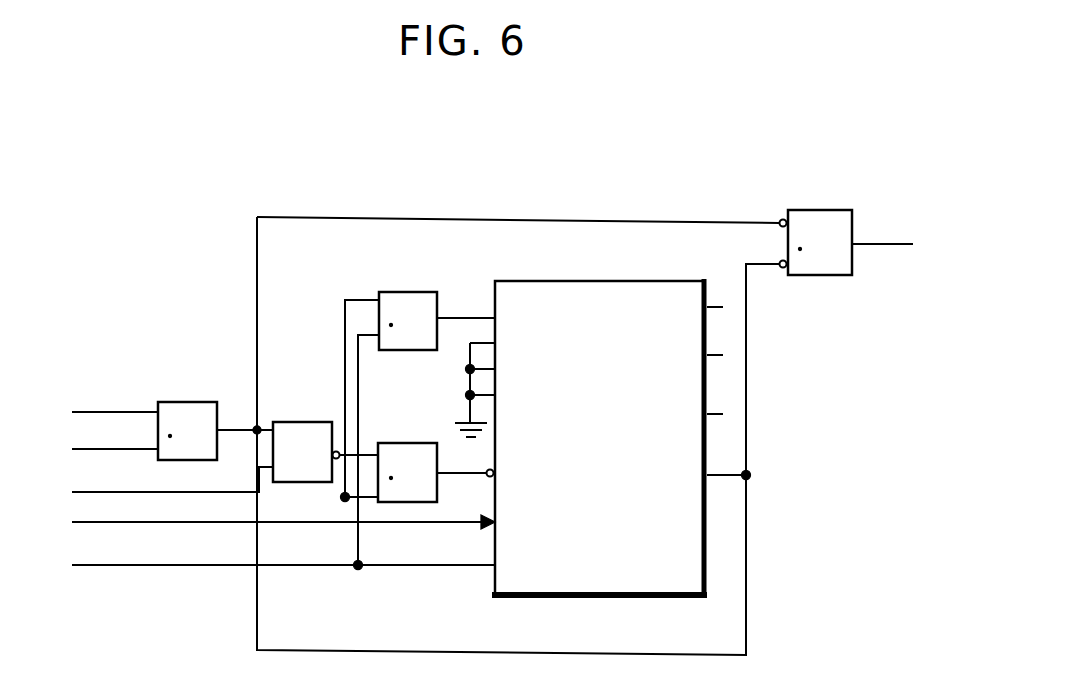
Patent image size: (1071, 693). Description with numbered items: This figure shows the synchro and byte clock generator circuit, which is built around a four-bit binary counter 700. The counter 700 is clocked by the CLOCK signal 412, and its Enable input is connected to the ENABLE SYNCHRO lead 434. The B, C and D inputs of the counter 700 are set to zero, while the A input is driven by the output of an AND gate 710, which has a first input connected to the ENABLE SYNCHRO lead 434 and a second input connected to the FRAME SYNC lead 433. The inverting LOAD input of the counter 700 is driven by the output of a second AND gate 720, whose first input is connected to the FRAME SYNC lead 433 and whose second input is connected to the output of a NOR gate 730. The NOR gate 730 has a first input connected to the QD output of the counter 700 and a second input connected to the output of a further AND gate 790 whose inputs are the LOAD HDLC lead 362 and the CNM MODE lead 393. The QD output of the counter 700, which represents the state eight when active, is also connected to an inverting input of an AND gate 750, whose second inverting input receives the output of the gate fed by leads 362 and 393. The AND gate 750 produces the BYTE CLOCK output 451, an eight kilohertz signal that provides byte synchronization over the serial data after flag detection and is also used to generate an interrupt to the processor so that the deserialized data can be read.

The CNM MODE lead 393 is at (100, 450).
The LOAD HDLC lead 362 is at (142, 413).
The AND gate 790 is at (189, 402).
The NOR gate 730 is at (323, 422).
The FRAME SYNC lead 433 is at (270, 493).
The CLOCK signal 412 is at (224, 517).
The ENABLE SYNCHRO lead 434 is at (202, 564).
The AND gate 710 is at (408, 292).
The AND gate 720 is at (400, 418).
The 4-bits binary counter 700 is at (667, 279).
The AND gate 750 is at (808, 210).
The byte clock output 451 is at (882, 244).